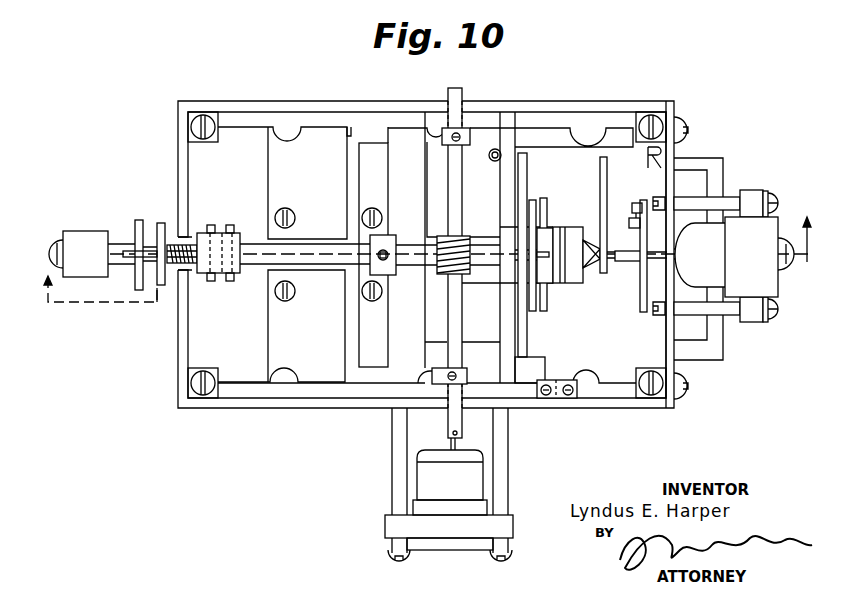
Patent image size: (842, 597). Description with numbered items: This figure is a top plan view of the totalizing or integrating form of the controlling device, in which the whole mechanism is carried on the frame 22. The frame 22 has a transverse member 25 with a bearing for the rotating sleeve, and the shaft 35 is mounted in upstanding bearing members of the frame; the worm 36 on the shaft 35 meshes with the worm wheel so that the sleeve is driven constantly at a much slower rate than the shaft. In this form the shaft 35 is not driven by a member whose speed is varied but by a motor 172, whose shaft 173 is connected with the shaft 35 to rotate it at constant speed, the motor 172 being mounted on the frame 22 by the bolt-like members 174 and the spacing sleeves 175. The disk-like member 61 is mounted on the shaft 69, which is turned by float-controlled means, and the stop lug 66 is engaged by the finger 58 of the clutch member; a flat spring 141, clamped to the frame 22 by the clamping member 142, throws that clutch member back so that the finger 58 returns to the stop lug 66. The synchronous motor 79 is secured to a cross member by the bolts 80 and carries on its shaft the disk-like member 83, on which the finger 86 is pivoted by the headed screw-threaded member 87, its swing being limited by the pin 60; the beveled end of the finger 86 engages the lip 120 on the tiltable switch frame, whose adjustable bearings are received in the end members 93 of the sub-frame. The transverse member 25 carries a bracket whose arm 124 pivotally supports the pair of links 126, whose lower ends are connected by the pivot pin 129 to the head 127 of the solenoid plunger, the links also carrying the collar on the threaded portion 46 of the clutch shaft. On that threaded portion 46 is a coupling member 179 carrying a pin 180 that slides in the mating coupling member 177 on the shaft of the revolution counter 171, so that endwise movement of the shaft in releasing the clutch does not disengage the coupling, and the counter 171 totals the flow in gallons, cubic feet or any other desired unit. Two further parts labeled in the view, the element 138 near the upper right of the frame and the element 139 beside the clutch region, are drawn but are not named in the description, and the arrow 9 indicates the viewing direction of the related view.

The frame 22 is at (331, 122).
The transverse member 25 is at (350, 325).
The shaft 35 is at (455, 204).
The worm 36 is at (438, 271).
The threaded portion of shaft 46 is at (187, 264).
The finger 58 is at (543, 247).
The pin 60 is at (627, 227).
The disk-like member 61 is at (525, 184).
The stop lug 66 is at (539, 293).
The shaft 69 is at (482, 252).
The motor 79 is at (710, 233).
The bolts 80 is at (712, 312).
The disk-like member 83 is at (642, 289).
The finger 86 is at (641, 198).
The headed screw-threaded member 87 is at (635, 207).
The end members 93 is at (432, 191).
The lip 120 is at (628, 263).
The arm 124 is at (298, 247).
The links 126 is at (200, 252).
The head 127 is at (192, 250).
The pivot pin 129 is at (214, 232).
The actuating rod 138 is at (606, 165).
The bevel gear 139 is at (592, 275).
The flat spring 141 is at (557, 346).
The clamping member 142 is at (564, 393).
The revolution counter 171 is at (81, 242).
The motor 172 is at (467, 478).
The shaft 173 is at (448, 447).
The bolt-like members 174 is at (390, 557).
The spacing sleeves 175 is at (400, 463).
The coupling member 177 is at (152, 250).
The coupling member 179 is at (163, 293).
The pin 180 is at (141, 248).
The direction arrow 9 is at (807, 249).